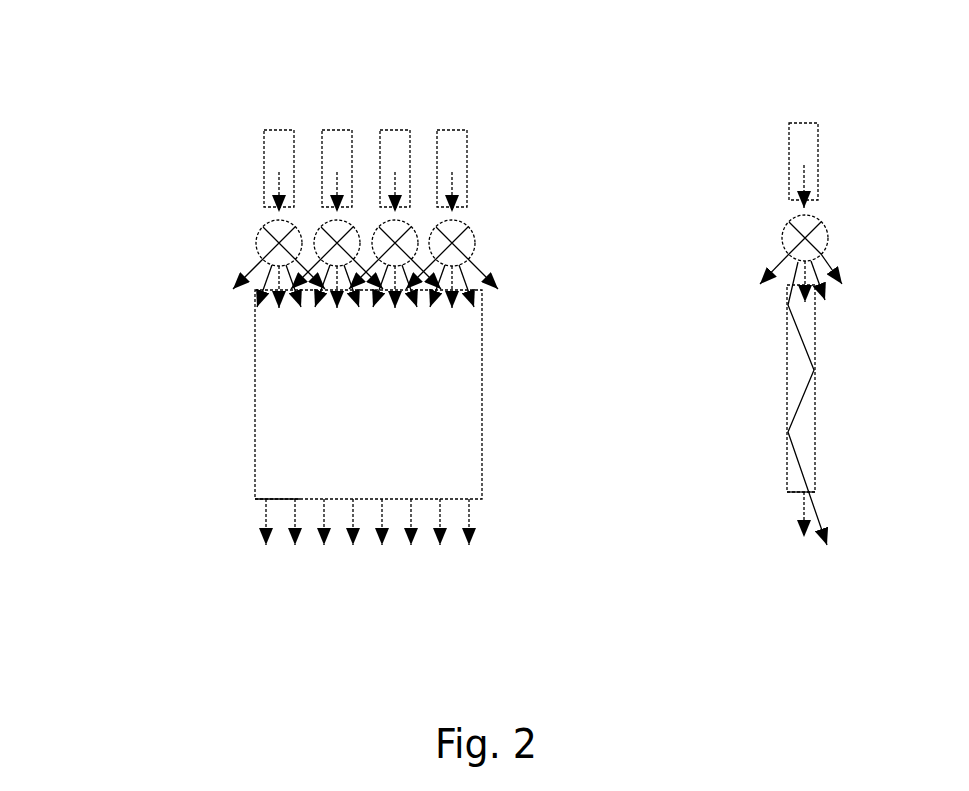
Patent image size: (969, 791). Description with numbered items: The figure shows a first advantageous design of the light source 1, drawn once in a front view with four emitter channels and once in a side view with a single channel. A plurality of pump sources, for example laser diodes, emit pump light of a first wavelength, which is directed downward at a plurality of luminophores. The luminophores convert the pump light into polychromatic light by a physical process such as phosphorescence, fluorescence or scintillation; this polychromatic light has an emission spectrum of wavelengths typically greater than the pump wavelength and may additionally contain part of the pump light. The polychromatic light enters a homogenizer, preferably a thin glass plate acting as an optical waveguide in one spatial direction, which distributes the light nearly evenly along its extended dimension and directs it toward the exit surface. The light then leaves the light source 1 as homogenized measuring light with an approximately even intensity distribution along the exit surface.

The light source 1 is at (182, 505).